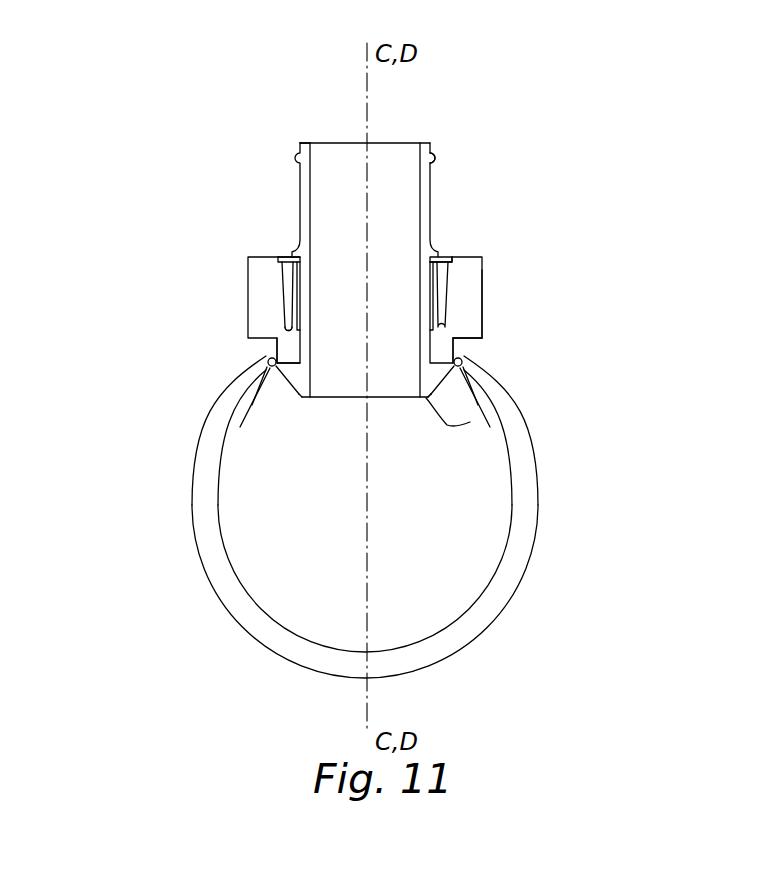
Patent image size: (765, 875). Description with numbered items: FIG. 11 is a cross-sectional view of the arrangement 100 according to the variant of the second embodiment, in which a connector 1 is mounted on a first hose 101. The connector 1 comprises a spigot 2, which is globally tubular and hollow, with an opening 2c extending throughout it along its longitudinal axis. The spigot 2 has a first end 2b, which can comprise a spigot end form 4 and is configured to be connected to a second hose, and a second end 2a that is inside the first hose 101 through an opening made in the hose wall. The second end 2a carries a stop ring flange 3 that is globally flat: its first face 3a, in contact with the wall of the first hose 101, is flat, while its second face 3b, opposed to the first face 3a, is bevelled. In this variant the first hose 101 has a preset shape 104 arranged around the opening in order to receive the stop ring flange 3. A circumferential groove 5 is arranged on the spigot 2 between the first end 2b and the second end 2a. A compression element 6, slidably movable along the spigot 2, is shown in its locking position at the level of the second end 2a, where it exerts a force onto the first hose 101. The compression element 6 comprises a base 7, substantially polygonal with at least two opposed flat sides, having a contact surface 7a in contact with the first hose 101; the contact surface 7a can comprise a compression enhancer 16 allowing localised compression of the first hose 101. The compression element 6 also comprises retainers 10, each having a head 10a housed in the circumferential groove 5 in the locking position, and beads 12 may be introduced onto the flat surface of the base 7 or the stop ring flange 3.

The connector 1 is at (248, 218).
The spigot 2 is at (275, 182).
The second end of the spigot 2a is at (287, 438).
The first end of the spigot 2b is at (275, 142).
The opening of the spigot 2c is at (388, 160).
The stop ring flange 3 is at (447, 382).
The first face of the stop ring flange 3a is at (462, 344).
The second face of the stop ring flange 3b is at (470, 422).
The spigot end form 4 is at (435, 162).
The circumferential groove 5 is at (447, 261).
The compression element 6 is at (527, 298).
The base 7 is at (465, 285).
The contact surface 7a is at (278, 339).
The retainer 10 is at (283, 298).
The head of the retainer 10a is at (280, 268).
The bead 12 is at (283, 332).
The compression enhancer 16 is at (268, 363).
The arrangement 100 is at (133, 587).
The first hose 101 is at (522, 526).
The preset shape 104 is at (475, 367).